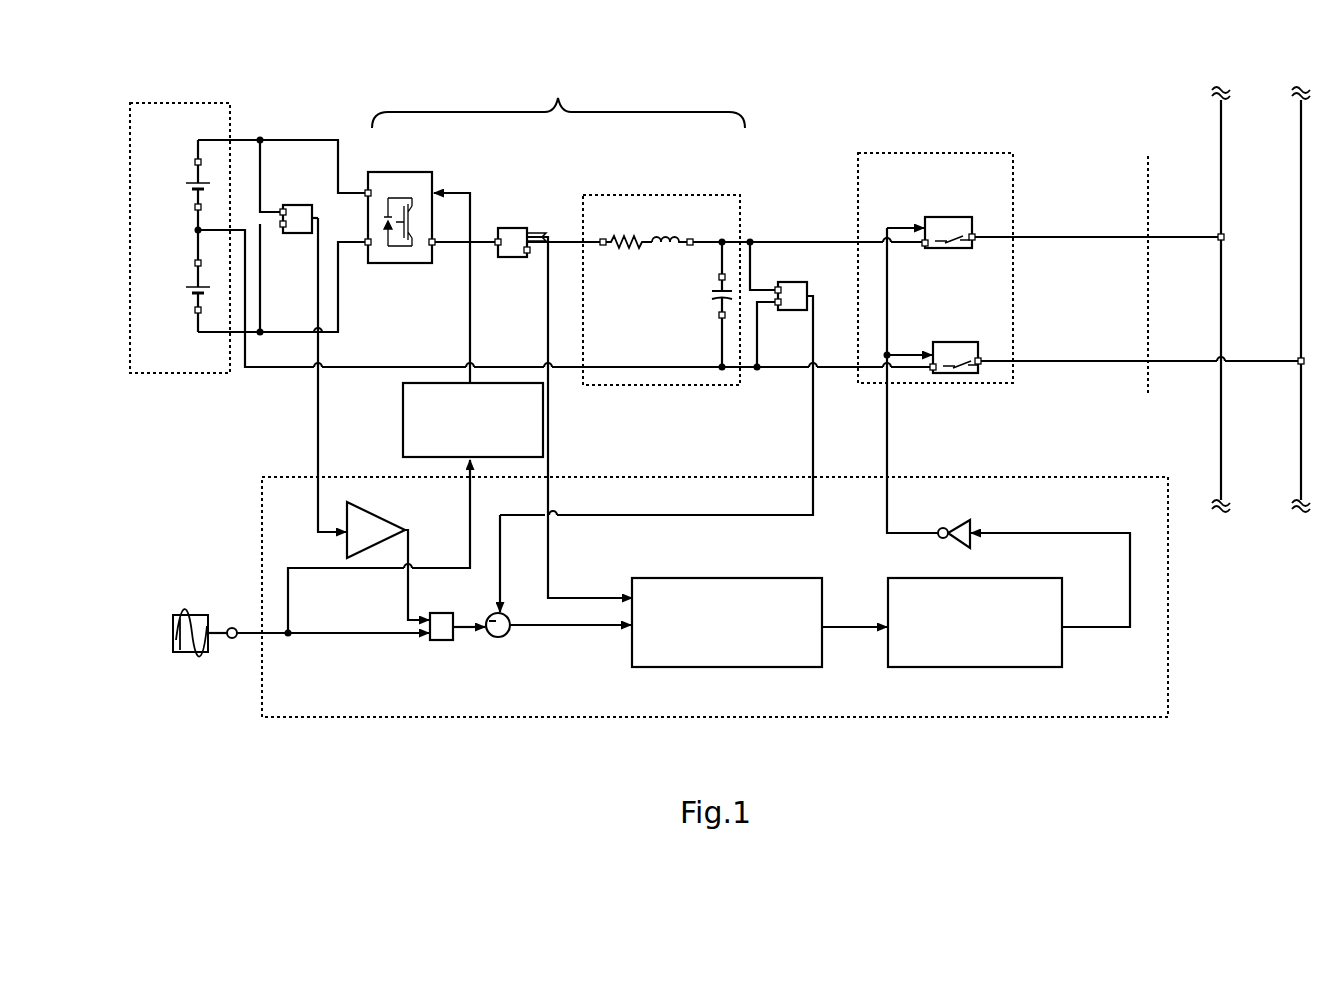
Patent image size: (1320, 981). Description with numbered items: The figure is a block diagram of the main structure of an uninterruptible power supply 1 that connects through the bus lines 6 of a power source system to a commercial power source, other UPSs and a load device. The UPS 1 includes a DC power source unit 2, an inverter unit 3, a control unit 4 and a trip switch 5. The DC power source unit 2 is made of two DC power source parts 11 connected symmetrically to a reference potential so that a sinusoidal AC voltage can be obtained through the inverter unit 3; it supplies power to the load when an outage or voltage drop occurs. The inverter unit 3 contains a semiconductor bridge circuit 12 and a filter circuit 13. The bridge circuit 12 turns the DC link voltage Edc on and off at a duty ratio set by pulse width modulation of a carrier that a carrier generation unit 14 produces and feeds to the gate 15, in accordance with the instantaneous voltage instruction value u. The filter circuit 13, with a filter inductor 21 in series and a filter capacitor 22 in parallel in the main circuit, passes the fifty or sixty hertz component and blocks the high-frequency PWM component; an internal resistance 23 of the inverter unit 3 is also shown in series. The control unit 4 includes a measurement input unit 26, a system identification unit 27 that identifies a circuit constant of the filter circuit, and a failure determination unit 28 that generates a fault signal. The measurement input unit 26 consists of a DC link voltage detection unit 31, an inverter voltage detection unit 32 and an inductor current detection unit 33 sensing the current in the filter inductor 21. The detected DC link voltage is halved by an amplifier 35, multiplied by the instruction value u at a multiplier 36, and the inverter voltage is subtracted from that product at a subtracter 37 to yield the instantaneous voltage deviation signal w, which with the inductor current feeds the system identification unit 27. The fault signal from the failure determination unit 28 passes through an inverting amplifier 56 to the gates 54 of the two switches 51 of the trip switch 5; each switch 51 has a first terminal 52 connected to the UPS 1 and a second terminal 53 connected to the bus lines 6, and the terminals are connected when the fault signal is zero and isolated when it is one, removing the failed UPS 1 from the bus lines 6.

The uninterruptible power supply 1 is at (848, 78).
The DC power source unit 2 is at (174, 103).
The inverter unit 3 is at (703, 420).
The control unit 4 is at (1168, 658).
The trip switch 5 is at (967, 153).
The bus lines 6 is at (1318, 460).
The DC power source parts 11 is at (190, 184).
The semiconductor bridge circuit 12 is at (398, 172).
The filter circuit 13 is at (652, 195).
The carrier generation unit 14 is at (403, 402).
The gate 15 is at (420, 226).
The filter inductor 21 is at (668, 254).
The filter capacitor 22 is at (710, 296).
The internal resistance 23 is at (623, 254).
The measurement input unit 26 is at (553, 239).
The system identification unit 27 is at (815, 578).
The failure determination unit 28 is at (1037, 578).
The DC link voltage detection unit 31 is at (303, 193).
The inverter voltage detection unit 32 is at (805, 268).
The inductor current detection unit 33 is at (522, 216).
The amplifier 35 is at (380, 506).
The multiplier 36 is at (450, 613).
The subtracter 37 is at (506, 637).
The switches 51 is at (986, 228).
The first terminals 52 is at (923, 249).
The second terminals 53 is at (973, 249).
The gates 54 is at (923, 229).
The inverting amplifier 56 is at (966, 520).